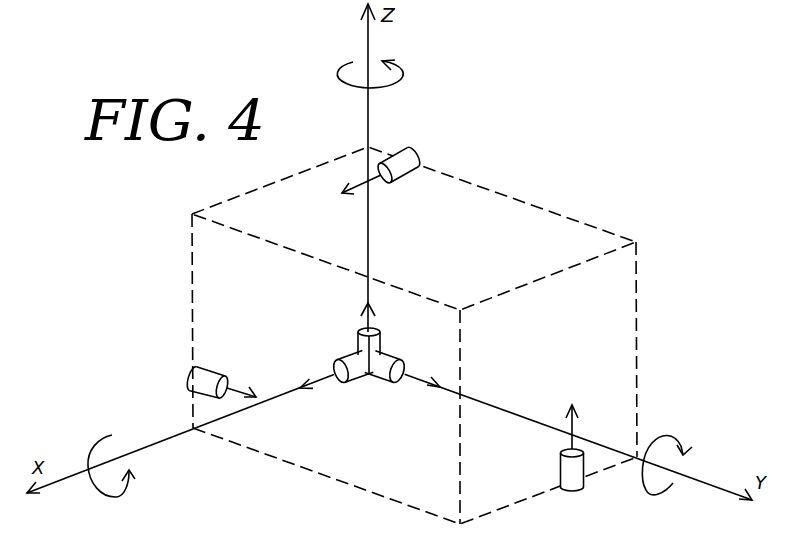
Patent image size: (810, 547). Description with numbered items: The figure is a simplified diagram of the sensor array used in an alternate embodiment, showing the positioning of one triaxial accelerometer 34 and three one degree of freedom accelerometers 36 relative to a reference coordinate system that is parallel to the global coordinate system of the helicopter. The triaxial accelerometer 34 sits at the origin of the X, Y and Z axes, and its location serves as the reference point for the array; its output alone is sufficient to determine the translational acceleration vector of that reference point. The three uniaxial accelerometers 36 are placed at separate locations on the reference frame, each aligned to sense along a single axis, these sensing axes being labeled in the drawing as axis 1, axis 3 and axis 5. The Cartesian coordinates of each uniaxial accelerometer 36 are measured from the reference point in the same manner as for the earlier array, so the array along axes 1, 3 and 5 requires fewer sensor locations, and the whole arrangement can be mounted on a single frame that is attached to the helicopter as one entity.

The triaxial accelerometer 34 is at (380, 346).
The one degree of freedom accelerometer 36 is at (497, 328).
The accelerometer sensing axis a1 1 is at (176, 374).
The accelerometer sensing axis a3 3 is at (606, 470).
The accelerometer sensing axis a5 5 is at (399, 139).